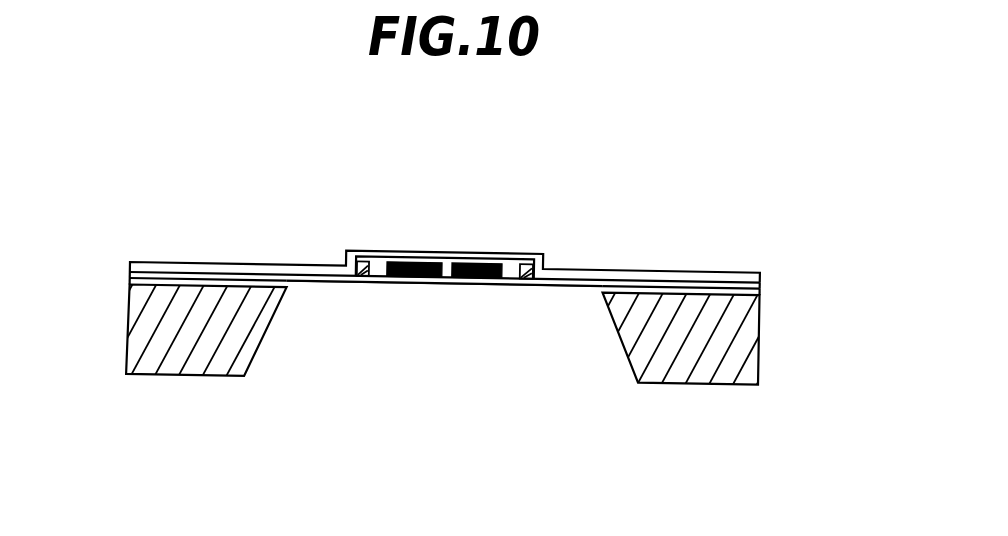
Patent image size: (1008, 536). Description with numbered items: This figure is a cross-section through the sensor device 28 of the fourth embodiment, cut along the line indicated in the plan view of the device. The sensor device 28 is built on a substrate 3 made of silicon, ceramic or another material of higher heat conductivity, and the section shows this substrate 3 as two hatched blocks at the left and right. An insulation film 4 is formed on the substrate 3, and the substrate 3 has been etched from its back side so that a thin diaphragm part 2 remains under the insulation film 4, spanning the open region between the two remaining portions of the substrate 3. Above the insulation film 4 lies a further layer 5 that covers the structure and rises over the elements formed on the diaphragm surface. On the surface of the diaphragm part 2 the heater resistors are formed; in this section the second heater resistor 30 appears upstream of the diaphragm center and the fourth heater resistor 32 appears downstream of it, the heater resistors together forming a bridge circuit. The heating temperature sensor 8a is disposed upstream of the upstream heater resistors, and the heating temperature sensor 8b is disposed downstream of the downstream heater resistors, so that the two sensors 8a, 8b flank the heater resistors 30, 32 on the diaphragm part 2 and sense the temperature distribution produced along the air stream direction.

The diaphragm part 2 is at (476, 346).
The substrate 3 is at (754, 341).
The insulation film 4 is at (762, 289).
The upper insulating film 5 is at (762, 278).
The heating temperature sensor 8a is at (361, 259).
The heating temperature sensor 8b is at (527, 260).
The sensor device 28 is at (178, 262).
The second heater resistor 30 is at (417, 259).
The fourth heater resistor 32 is at (478, 259).